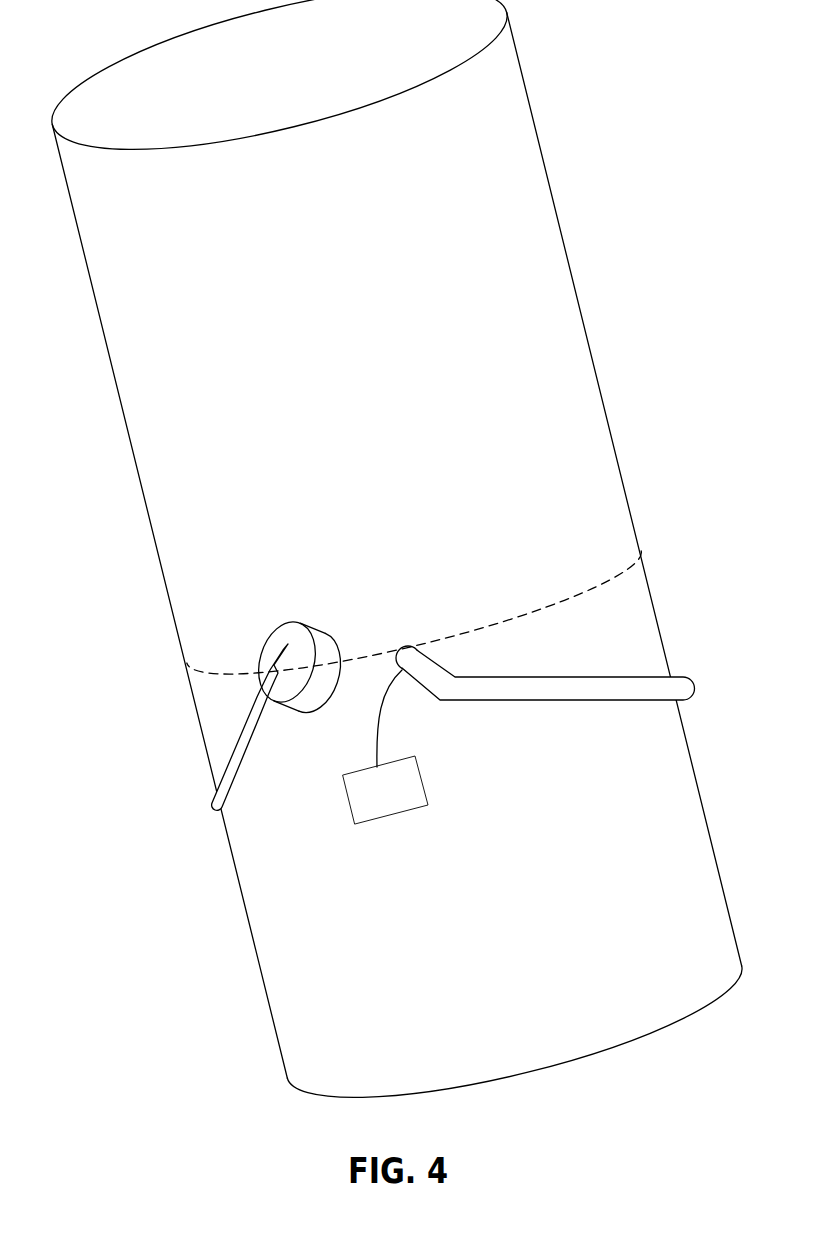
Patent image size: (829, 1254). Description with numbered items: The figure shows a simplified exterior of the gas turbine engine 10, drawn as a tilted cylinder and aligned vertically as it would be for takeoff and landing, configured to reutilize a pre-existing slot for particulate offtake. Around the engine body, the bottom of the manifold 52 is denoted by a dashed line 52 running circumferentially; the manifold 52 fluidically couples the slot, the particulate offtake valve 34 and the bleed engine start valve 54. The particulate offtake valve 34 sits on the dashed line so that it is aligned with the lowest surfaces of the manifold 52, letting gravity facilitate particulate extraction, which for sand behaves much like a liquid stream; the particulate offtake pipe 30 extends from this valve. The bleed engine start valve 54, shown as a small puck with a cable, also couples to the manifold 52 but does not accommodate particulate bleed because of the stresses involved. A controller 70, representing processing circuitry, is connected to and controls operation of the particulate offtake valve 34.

The gas turbine engine 10 is at (638, 76).
The particulate offtake pipe 30 is at (563, 690).
The particulate offtake valve 34 is at (407, 648).
The manifold 52 is at (603, 582).
The bleed engine start valve 54 is at (308, 620).
The controller 70 is at (413, 793).